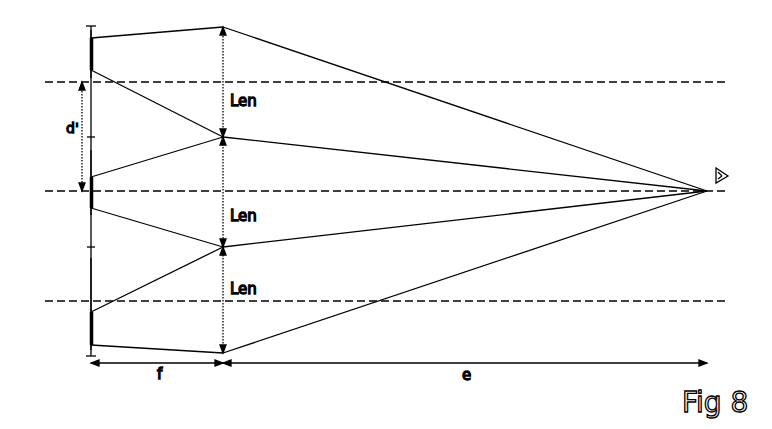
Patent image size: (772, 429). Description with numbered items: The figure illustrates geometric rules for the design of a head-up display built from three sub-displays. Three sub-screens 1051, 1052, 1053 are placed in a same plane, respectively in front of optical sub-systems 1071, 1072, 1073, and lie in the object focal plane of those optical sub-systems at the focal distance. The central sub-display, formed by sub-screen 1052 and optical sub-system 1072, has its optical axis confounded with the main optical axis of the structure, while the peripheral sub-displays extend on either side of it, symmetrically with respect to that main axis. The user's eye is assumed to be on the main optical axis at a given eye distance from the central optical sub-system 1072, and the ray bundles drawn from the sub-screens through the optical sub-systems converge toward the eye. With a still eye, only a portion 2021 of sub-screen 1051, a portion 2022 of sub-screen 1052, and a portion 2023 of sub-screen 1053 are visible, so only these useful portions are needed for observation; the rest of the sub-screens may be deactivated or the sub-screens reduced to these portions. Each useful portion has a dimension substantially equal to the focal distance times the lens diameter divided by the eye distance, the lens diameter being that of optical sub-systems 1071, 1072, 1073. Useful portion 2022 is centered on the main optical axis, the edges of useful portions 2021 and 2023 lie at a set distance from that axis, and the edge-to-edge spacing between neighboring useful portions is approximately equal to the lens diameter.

The sub-screen 1051 is at (90, 29).
The useful portion of sub-screen 2021 is at (90, 52).
The sub-screen 1052 is at (90, 154).
The useful portion of sub-screen 2022 is at (90, 204).
The sub-screen 1053 is at (91, 263).
The useful portion of sub-screen 2023 is at (90, 326).
The optical sub-system 1071 is at (225, 52).
The optical sub-system 1072 is at (225, 160).
The optical sub-system 1073 is at (225, 352).